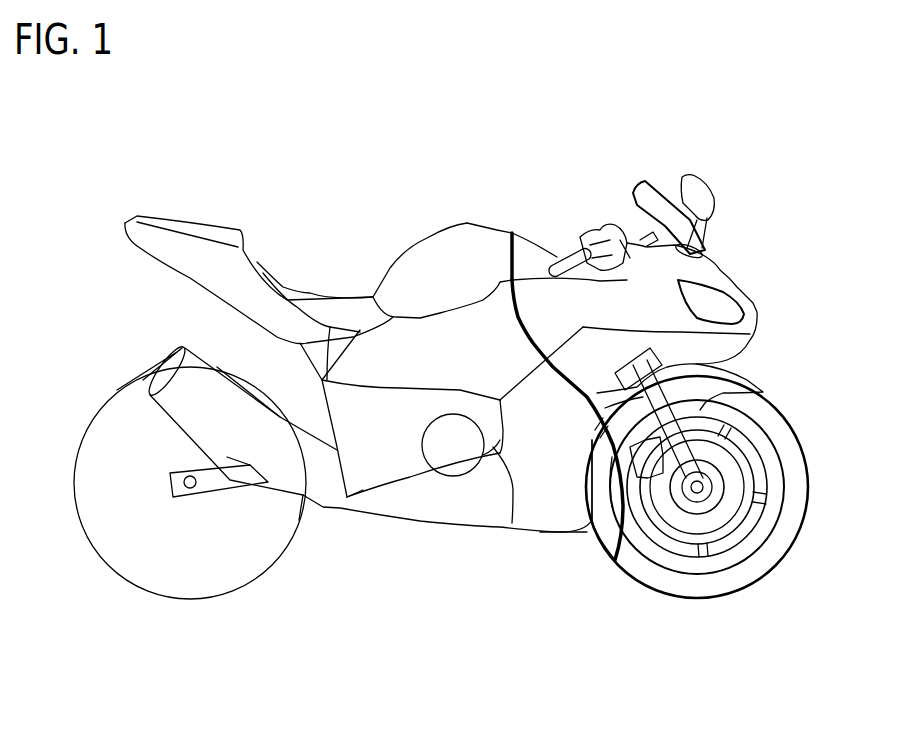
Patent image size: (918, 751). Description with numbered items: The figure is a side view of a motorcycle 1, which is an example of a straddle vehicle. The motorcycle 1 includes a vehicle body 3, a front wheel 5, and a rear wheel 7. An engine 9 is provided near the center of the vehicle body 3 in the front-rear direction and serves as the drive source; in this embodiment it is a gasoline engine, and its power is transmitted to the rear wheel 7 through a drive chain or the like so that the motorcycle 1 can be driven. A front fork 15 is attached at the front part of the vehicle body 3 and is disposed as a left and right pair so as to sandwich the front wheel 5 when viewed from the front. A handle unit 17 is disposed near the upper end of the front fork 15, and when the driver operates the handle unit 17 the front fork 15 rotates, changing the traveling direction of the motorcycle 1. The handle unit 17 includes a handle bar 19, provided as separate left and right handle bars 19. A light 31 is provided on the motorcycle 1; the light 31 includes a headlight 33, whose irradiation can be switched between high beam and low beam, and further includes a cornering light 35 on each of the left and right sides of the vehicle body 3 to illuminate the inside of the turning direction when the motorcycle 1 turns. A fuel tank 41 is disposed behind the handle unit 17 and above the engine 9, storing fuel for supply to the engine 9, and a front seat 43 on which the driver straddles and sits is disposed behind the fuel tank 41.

The motorcycle 1 is at (72, 173).
The vehicle body 3 is at (446, 548).
The front wheel 5 is at (710, 585).
The rear wheel 7 is at (208, 600).
The engine 9 is at (512, 523).
The front fork 15 is at (690, 470).
The handle unit 17 is at (582, 215).
The handle bar 19 is at (637, 223).
The light 31 is at (745, 240).
The headlight 33 is at (732, 312).
The cornering light 35 is at (593, 407).
The fuel tank 41 is at (432, 240).
The front seat 43 is at (313, 293).